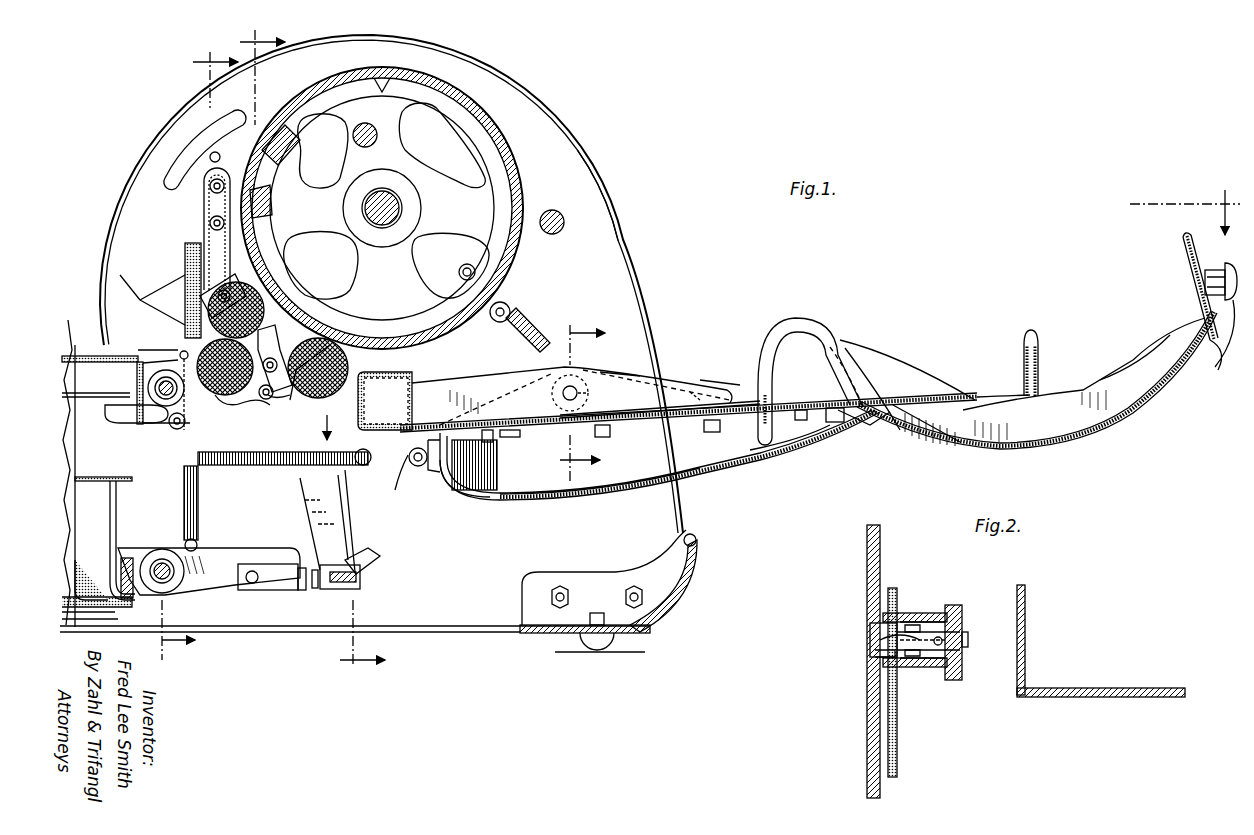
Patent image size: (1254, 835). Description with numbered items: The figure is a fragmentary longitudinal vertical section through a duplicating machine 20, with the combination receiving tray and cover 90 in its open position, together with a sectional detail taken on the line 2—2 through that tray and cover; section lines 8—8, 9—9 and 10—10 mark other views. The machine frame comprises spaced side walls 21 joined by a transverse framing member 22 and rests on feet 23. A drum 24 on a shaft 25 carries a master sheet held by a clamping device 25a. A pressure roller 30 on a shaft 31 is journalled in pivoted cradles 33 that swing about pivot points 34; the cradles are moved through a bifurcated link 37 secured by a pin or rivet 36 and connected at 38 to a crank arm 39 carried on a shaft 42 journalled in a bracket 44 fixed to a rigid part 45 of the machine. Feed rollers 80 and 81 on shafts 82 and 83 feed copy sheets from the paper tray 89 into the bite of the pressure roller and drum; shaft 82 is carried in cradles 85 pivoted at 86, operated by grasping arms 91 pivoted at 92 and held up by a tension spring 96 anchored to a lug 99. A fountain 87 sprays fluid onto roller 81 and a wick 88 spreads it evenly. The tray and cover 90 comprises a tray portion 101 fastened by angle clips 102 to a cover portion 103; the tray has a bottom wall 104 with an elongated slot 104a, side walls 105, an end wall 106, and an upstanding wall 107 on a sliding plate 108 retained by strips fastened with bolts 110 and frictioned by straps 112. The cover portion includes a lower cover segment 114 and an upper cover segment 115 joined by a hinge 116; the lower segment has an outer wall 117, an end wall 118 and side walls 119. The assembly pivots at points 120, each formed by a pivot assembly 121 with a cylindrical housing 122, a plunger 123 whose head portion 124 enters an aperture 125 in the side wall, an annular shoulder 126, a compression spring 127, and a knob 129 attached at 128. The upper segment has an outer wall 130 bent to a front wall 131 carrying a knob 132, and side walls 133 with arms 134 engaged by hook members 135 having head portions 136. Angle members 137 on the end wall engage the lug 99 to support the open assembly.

In FIG. 1, the section line 2— 2 is at (582, 397).
In FIG. 1, the section line 8— 8 is at (189, 356).
In FIG. 1, the section line 9— 9 is at (306, 359).
In FIG. 1, the section line 10— 10 is at (766, 304).
In FIG. 1, the duplicating machine 20 is at (598, 175).
In FIG. 1, the side walls 21 is at (600, 262).
In FIG. 2, the side walls 21 is at (867, 573).
In FIG. 1, the transverse framing member 22 is at (685, 603).
In FIG. 1, the feet 23 is at (605, 648).
In FIG. 1, the drum 24 is at (500, 140).
In FIG. 1, the shaft 25 is at (395, 200).
In FIG. 1, the clamping device 25a is at (290, 148).
In FIG. 1, the pressure roller 30 is at (305, 388).
In FIG. 1, the shaft 31 is at (332, 345).
In FIG. 1, the cradles 33 is at (305, 500).
In FIG. 1, the pivot points 34 is at (290, 322).
In FIG. 1, the pin or rivet 36 is at (368, 570).
In FIG. 1, the bifurcated link 37 is at (332, 593).
In FIG. 1, the connection 38 is at (250, 592).
In FIG. 1, the crank arm 39 is at (250, 546).
In FIG. 1, the shaft 42 is at (158, 560).
In FIG. 1, the bracket 44 is at (130, 600).
In FIG. 1, the rigid part 45 is at (88, 608).
In FIG. 1, the feed roller 80 is at (244, 402).
In FIG. 1, the feed roller 81 is at (248, 298).
In FIG. 1, the shaft 82 is at (185, 398).
In FIG. 1, the shaft 83 is at (240, 322).
In FIG. 1, the cradles 85 is at (192, 420).
In FIG. 1, the pivot points 86 is at (170, 388).
In FIG. 1, the fountain 87 is at (210, 256).
In FIG. 1, the wick 88 is at (200, 282).
In FIG. 1, the paper tray 89 is at (72, 350).
In FIG. 1, the combination receiving tray and cover 90 is at (712, 376).
In FIG. 1, the grasping arms 91 is at (118, 418).
In FIG. 1, the pivot 92 is at (170, 425).
In FIG. 1, the tension spring 96 is at (243, 466).
In FIG. 1, the lug 99 is at (413, 463).
In FIG. 1, the tray portion 101 is at (610, 378).
In FIG. 1, the angle clips 102 is at (838, 437).
In FIG. 1, the cover portion 103 is at (775, 460).
In FIG. 1, the bottom wall 104 is at (440, 428).
In FIG. 2, the bottom wall 104 is at (1140, 688).
In FIG. 1, the elongated slot 104a is at (685, 430).
In FIG. 1, the side walls 105 is at (462, 392).
In FIG. 2, the side walls 105 is at (1026, 620).
In FIG. 1, the end wall 106 is at (385, 401).
In FIG. 1, the upstanding wall 107 is at (1040, 355).
In FIG. 1, the sliding plate 108 is at (970, 397).
In FIG. 1, the bolts 110 is at (608, 440).
In FIG. 1, the straps 112 is at (514, 444).
In FIG. 1, the lower cover segment 114 is at (616, 500).
In FIG. 1, the upper cover segment 115 is at (1140, 400).
In FIG. 1, the hinge 116 is at (850, 425).
In FIG. 1, the outer wall 117 is at (545, 500).
In FIG. 1, the end wall 118 is at (450, 492).
In FIG. 1, the side walls 119 is at (688, 392).
In FIG. 2, the side walls 119 is at (897, 718).
In FIG. 1, the pivot points 120 is at (562, 398).
In FIG. 2, the pivot points 120 is at (862, 660).
In FIG. 2, the pivot assembly 121 is at (918, 620).
In FIG. 2, the cylindrical housing 122 is at (936, 624).
In FIG. 2, the plunger 123 is at (905, 665).
In FIG. 2, the head portion 124 is at (878, 632).
In FIG. 2, the aperture 125 is at (873, 655).
In FIG. 2, the annular shoulder 126 is at (960, 630).
In FIG. 2, the compression spring 127 is at (905, 613).
In FIG. 2, the attachment 128 is at (968, 640).
In FIG. 1, the knob 129 is at (590, 395).
In FIG. 2, the knob 129 is at (962, 672).
In FIG. 1, the outer wall 130 is at (1058, 450).
In FIG. 1, the front wall 131 is at (1188, 262).
In FIG. 1, the knob 132 is at (1220, 362).
In FIG. 1, the side walls 133 is at (1075, 392).
In FIG. 1, the arm 134 is at (852, 360).
In FIG. 1, the hook member 135 is at (790, 330).
In FIG. 1, the head portion 136 is at (834, 330).
In FIG. 1, the angle member 137 is at (432, 482).